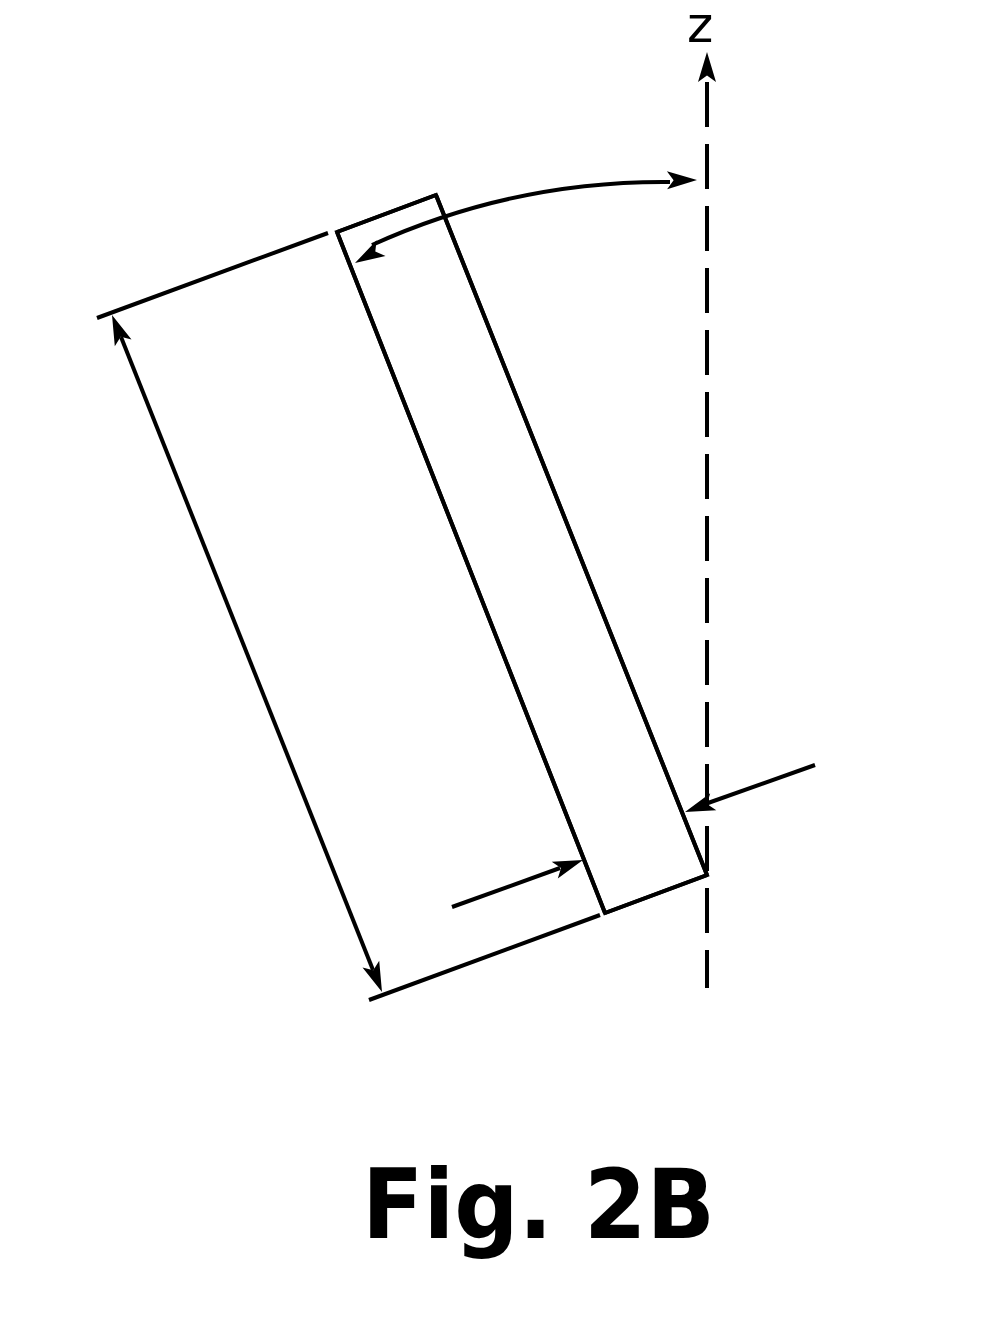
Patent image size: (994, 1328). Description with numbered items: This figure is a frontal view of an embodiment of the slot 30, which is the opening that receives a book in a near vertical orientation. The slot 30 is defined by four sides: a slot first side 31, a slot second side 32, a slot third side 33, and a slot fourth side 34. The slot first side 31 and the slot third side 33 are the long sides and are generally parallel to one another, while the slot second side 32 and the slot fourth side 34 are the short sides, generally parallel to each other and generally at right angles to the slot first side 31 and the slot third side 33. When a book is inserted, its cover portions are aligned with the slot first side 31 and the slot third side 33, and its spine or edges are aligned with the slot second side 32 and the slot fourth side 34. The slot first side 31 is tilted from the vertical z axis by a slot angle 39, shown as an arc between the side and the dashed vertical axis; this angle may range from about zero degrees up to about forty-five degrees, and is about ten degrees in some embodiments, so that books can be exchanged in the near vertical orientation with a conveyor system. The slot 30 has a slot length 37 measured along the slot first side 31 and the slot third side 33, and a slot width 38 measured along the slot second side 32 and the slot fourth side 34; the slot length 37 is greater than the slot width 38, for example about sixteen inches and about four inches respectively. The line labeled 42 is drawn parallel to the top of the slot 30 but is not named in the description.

The slot 30 is at (515, 618).
The slot first side 31 is at (407, 415).
The slot second side 32 is at (383, 212).
The slot third side 33 is at (513, 390).
The slot fourth side 34 is at (645, 902).
The slot length 37 is at (242, 647).
The slot width 38 is at (772, 780).
The slot angle 39 is at (530, 198).
The reference line 42 is at (112, 266).